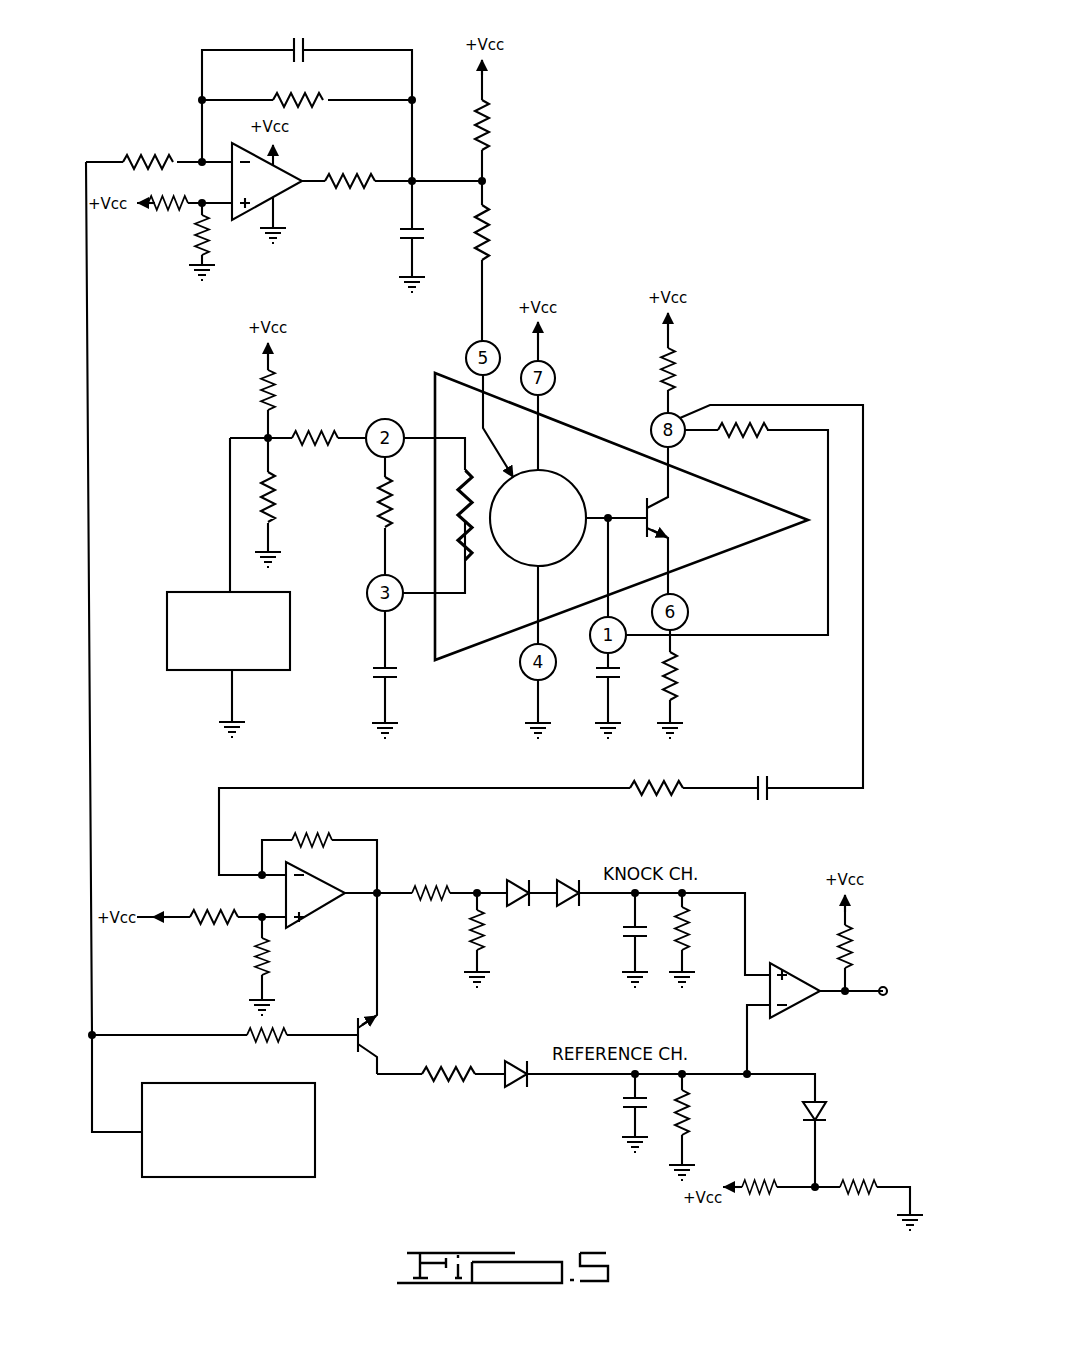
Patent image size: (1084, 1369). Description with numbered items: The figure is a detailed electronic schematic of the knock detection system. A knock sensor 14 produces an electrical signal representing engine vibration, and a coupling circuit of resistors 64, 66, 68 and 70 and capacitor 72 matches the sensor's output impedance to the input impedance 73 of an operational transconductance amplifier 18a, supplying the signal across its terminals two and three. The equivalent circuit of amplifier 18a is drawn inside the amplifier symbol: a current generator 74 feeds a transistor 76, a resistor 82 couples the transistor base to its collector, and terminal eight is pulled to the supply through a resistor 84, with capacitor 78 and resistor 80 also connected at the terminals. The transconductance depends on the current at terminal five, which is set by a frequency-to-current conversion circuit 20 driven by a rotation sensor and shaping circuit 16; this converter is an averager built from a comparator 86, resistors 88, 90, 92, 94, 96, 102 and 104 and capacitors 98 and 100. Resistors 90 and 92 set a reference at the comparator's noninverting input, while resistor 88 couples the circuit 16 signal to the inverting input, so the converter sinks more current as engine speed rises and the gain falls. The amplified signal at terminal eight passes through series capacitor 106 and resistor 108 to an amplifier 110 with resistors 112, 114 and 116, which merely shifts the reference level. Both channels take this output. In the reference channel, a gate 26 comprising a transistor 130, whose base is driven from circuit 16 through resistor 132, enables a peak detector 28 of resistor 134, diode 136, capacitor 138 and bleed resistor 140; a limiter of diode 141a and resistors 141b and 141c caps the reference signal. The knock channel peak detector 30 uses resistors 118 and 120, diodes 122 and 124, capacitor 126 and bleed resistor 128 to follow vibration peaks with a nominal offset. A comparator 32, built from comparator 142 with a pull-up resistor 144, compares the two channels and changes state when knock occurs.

The knock sensor 14 is at (188, 596).
The sensor and shaping circuit 16 is at (305, 1150).
The operational transconductance amplifier 18a is at (435, 372).
The frequency-to-current conversion circuit 20 is at (150, 62).
The gate 26 is at (387, 1031).
The peak detector circuit 28 is at (592, 1092).
The peak detector 30 is at (556, 945).
The comparator 32 is at (813, 1010).
The resistor 64 is at (290, 395).
The resistor 66 is at (285, 510).
The resistor 68 is at (318, 435).
The resistor 70 is at (376, 500).
The capacitor 72 is at (400, 678).
The input impedance 73 is at (470, 548).
The current generator 74 is at (576, 504).
The transistor 76 is at (664, 522).
The capacitor 78 is at (600, 673).
The resistor 80 is at (680, 690).
The resistor 82 is at (758, 440).
The resistor 84 is at (680, 370).
The comparator 86 is at (288, 198).
The resistor 88 is at (150, 158).
The resistor 90 is at (165, 210).
The resistor 92 is at (212, 238).
The resistor 94 is at (355, 178).
The resistor 96 is at (322, 100).
The capacitor 98 is at (305, 46).
The capacitor 100 is at (402, 236).
The resistor 102 is at (494, 136).
The resistor 104 is at (494, 240).
The capacitor 106 is at (772, 784).
The resistor 108 is at (670, 790).
The amplifier 110 is at (306, 915).
The resistor 112 is at (215, 914).
The resistor 114 is at (255, 960).
The resistor 116 is at (325, 840).
The resistor 118 is at (412, 882).
The resistor 120 is at (470, 932).
The diode 122 is at (511, 880).
The diode 124 is at (566, 882).
The capacitor 126 is at (626, 934).
The resistor 128 is at (686, 930).
The transistor 130 is at (364, 1043).
The resistor 132 is at (280, 1032).
The resistor 134 is at (446, 1066).
The diode 136 is at (499, 1062).
The capacitor 138 is at (626, 1112).
The resistor 140 is at (689, 1126).
The diode 141a is at (826, 1112).
The resistor 141b is at (746, 1185).
The resistor 141c is at (846, 1187).
The comparator 142 is at (795, 975).
The resistor 144 is at (836, 936).